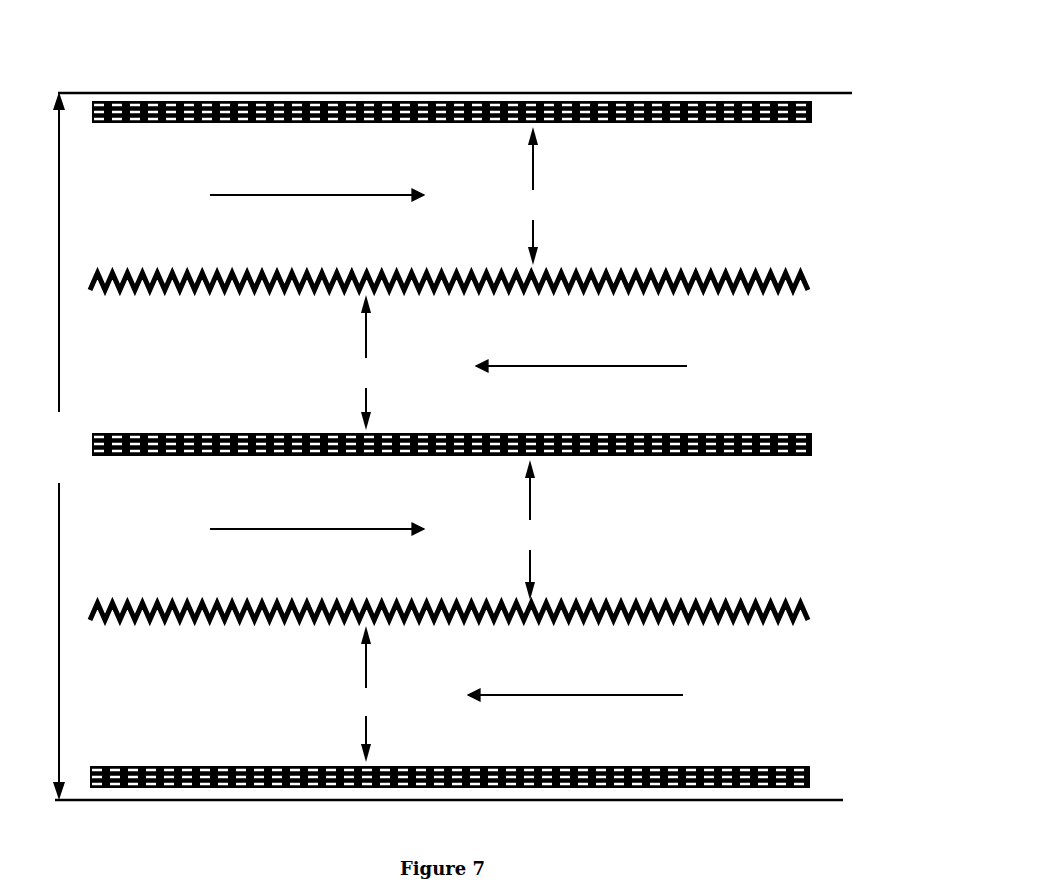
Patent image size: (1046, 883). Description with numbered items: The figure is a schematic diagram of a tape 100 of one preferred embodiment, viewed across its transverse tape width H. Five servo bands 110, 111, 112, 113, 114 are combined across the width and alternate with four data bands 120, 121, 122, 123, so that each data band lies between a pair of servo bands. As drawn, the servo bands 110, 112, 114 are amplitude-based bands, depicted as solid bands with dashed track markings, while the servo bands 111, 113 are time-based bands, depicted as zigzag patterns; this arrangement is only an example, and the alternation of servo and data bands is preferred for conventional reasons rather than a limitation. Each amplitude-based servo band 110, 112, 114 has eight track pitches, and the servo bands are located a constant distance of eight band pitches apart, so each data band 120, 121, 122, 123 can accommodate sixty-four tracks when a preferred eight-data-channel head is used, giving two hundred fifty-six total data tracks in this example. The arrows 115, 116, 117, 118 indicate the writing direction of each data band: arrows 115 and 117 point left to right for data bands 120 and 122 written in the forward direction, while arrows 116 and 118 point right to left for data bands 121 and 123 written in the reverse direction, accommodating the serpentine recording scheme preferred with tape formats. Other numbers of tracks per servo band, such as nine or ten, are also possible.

The tape 100 is at (640, 53).
The servo band 110 is at (106, 124).
The servo band 111 is at (135, 292).
The servo band 112 is at (135, 457).
The servo band 113 is at (135, 622).
The servo band 114 is at (128, 766).
The arrow 115 is at (296, 197).
The arrow 116 is at (604, 367).
The arrow 117 is at (296, 532).
The arrow 118 is at (601, 697).
The data band 120 is at (550, 216).
The data band 121 is at (383, 384).
The data band 122 is at (550, 547).
The data band 123 is at (384, 714).